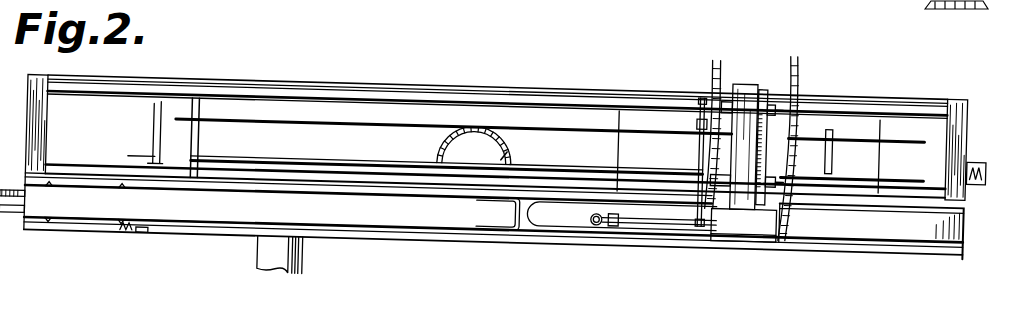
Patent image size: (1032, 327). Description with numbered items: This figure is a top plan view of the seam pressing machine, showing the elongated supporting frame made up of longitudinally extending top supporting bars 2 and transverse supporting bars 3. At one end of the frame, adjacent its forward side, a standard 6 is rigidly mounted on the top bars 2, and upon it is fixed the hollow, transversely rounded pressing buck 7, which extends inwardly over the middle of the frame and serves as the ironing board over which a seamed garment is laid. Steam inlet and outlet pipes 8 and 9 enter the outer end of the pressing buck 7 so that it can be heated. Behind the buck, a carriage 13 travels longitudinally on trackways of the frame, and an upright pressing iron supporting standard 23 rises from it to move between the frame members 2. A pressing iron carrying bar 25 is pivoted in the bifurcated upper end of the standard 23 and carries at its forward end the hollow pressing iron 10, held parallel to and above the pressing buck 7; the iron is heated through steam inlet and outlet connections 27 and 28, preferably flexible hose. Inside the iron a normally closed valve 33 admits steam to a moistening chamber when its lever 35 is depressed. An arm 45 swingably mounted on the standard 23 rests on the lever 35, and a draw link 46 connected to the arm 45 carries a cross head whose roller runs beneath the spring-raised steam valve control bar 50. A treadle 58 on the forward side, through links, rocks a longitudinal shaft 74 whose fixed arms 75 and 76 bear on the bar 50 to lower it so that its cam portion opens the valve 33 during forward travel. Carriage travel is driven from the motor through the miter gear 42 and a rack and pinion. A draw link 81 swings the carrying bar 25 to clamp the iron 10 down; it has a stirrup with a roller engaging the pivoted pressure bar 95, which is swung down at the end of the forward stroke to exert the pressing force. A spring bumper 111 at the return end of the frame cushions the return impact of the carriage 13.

The top supporting bars 2 is at (166, 84).
The transverse supporting bars 3 is at (28, 124).
The standard 6 is at (114, 226).
The pressing buck 7 is at (456, 210).
The steam inlet pipe 8 is at (12, 192).
The steam outlet pipe 9 is at (18, 215).
The pressing iron 10 is at (869, 207).
The carriage 13 is at (625, 134).
The pressing iron supporting standard 23 is at (762, 76).
The pressing iron carrying bar 25 is at (743, 70).
The steam inlet connection 27 is at (712, 60).
The steam outlet connection 28 is at (795, 62).
The valve 33 is at (601, 207).
The lever 35 is at (661, 206).
The miter gear 42 is at (505, 146).
The arm 45 is at (702, 136).
The draw link 46 is at (698, 105).
The steam valve control bar 50 is at (864, 120).
The treadle 58 is at (305, 252).
The shaft 74 is at (265, 159).
The arm 75 is at (203, 105).
The arm 76 is at (835, 130).
The draw link 81 is at (767, 159).
The pressure bar 95 is at (426, 153).
The spring bumper 111 is at (968, 148).